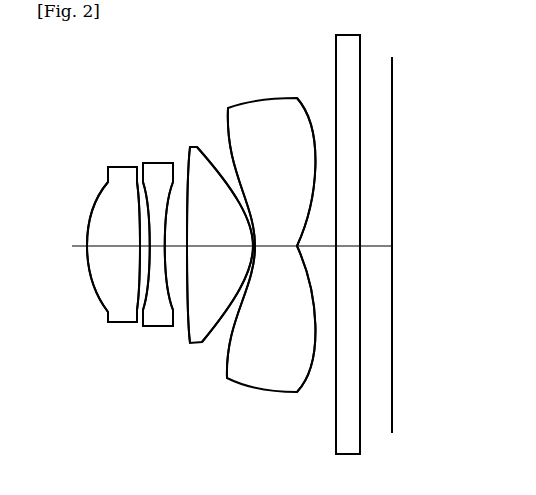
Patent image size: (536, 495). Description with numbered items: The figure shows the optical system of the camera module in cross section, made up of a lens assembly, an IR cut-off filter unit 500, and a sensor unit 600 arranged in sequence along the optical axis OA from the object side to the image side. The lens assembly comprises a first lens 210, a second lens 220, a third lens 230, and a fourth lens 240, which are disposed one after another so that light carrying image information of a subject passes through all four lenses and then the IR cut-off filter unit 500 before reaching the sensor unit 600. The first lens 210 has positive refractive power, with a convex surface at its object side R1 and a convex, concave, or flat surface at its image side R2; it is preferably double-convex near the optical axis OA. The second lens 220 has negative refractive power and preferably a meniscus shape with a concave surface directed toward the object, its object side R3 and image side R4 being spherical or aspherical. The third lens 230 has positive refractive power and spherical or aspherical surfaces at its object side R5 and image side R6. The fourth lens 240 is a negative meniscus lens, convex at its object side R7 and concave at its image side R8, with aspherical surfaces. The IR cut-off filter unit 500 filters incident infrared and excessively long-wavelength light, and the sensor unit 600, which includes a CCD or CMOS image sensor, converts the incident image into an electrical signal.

The optical axis OA is at (222, 247).
The first lens 210 is at (121, 318).
The second lens 220 is at (158, 327).
The third lens 230 is at (202, 342).
The fourth lens 240 is at (272, 382).
The IR cut-off filter unit 500 is at (348, 455).
The sensor unit 600 is at (393, 396).
The object side of first lens R1 is at (90, 273).
The image side of first lens R2 is at (140, 212).
The object side of second lens R3 is at (150, 252).
The image side of second lens R4 is at (165, 223).
The object side of third lens R5 is at (203, 233).
The image side of third lens R6 is at (237, 190).
The object side of fourth lens R7 is at (242, 330).
The image side of fourth lens R8 is at (317, 332).